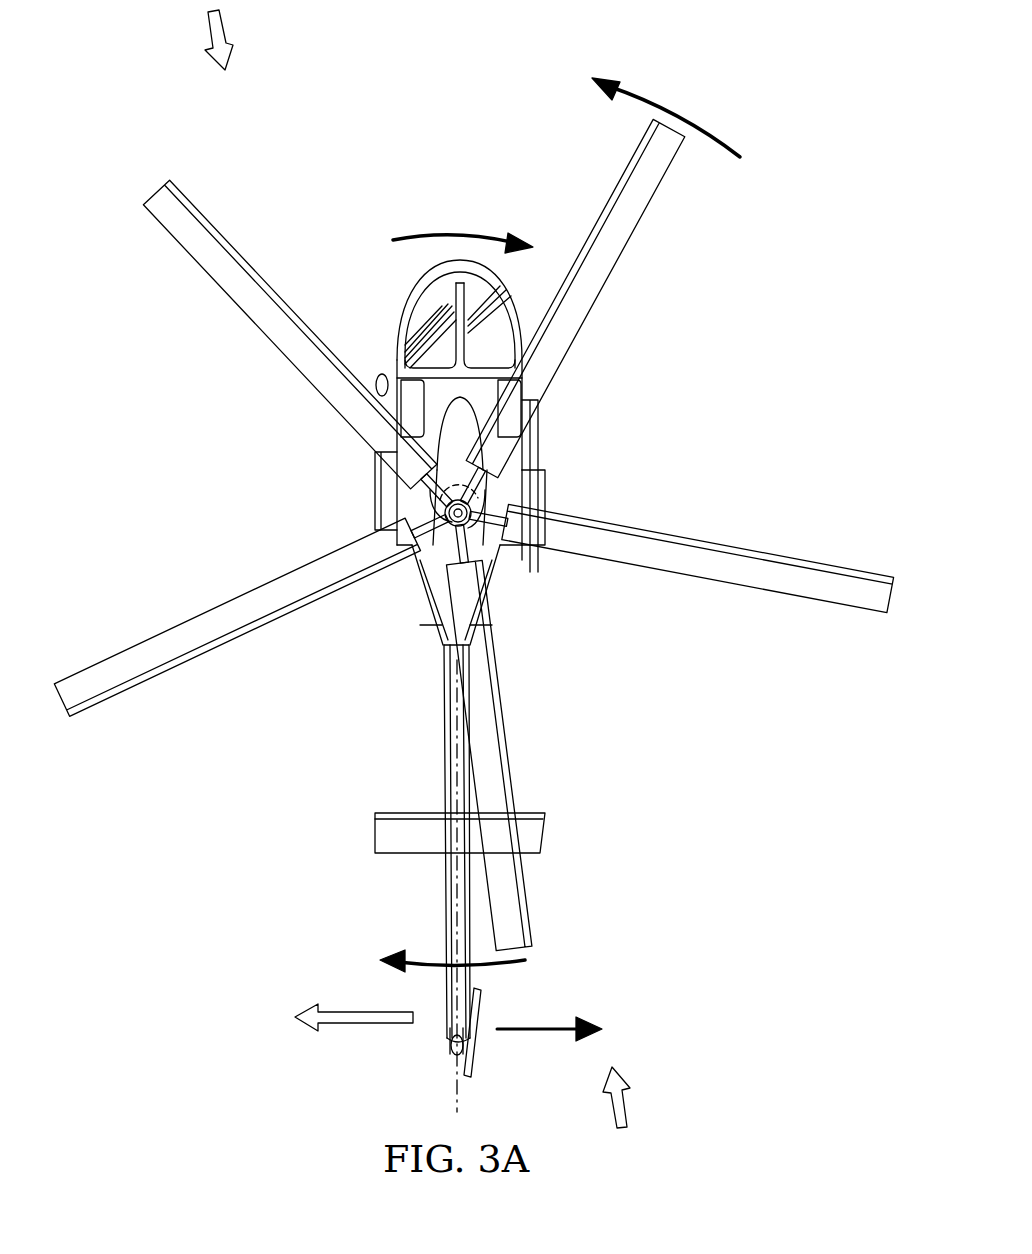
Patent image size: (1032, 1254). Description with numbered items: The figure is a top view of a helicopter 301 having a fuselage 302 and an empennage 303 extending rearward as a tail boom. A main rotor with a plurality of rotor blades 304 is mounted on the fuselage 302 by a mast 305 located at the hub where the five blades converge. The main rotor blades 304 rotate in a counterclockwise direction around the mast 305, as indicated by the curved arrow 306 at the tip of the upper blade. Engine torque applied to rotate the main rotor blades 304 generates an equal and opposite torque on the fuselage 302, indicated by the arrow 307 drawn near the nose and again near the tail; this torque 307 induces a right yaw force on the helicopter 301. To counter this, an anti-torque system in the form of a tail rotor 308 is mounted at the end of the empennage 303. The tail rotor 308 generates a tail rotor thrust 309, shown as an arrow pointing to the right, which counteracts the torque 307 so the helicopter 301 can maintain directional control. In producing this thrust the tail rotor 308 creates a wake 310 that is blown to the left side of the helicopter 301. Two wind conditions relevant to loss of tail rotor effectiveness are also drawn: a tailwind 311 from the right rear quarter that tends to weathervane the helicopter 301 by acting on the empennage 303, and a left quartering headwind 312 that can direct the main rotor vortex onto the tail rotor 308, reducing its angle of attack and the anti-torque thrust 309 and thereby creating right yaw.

The helicopter 301 is at (335, 163).
The fuselage 302 is at (413, 318).
The empennage 303 is at (452, 763).
The rotor blades 304 is at (603, 290).
The mast 305 is at (444, 513).
The arrow indicating counterclockwise rotation 306 is at (677, 110).
The torque arrow 307 is at (455, 226).
The tail rotor 308 is at (483, 1007).
The tail rotor thrust 309 is at (537, 1032).
The wake 310 is at (367, 1025).
The tailwind 311 is at (628, 1105).
The left quartering headwind 312 is at (223, 23).